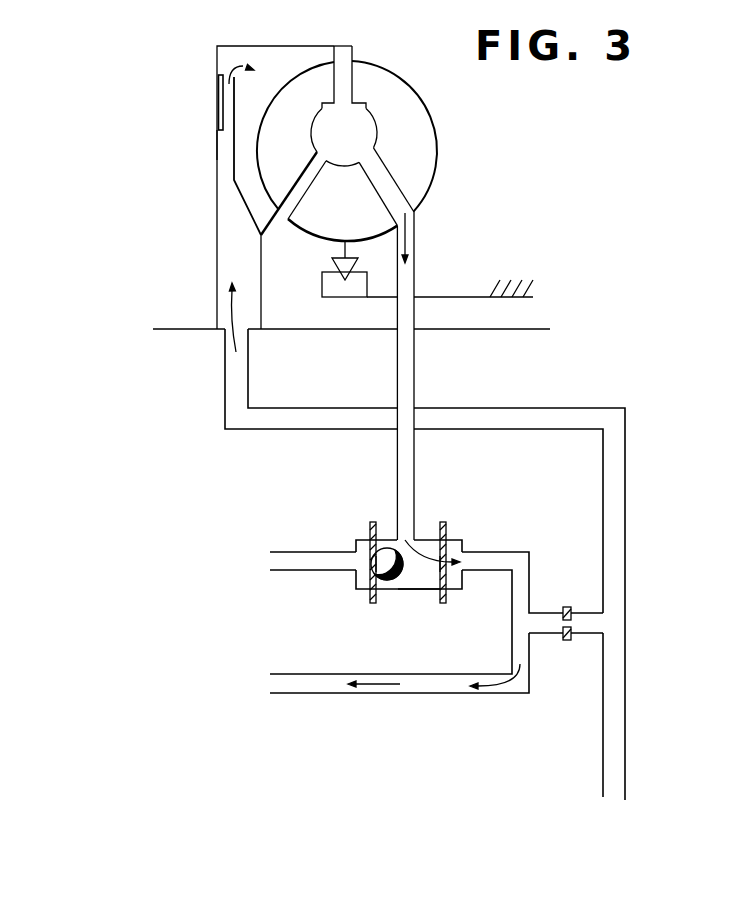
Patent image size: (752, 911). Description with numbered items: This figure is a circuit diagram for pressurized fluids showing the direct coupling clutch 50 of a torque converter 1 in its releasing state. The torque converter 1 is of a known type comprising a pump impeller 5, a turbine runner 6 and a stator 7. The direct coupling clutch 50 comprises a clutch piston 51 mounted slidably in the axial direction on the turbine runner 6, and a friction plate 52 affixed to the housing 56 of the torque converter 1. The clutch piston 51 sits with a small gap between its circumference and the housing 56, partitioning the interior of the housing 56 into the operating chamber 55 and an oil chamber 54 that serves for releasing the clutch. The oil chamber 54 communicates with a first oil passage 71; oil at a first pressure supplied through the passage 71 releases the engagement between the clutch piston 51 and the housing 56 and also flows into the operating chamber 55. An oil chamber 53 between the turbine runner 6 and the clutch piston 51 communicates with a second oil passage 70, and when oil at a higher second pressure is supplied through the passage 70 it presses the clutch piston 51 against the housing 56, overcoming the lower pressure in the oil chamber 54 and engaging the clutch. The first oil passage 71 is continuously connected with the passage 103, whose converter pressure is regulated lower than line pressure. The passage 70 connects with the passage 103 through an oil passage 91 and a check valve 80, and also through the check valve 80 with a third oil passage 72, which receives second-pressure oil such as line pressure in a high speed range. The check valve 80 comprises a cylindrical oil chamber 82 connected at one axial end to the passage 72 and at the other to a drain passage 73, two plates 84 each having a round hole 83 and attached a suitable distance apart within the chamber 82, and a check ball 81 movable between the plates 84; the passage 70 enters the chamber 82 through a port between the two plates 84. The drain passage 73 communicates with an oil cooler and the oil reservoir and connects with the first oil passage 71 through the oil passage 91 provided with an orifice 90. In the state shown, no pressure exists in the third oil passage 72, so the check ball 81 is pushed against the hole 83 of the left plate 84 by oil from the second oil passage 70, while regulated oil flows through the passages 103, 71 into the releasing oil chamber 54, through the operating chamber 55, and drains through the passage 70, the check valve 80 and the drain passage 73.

The torque converter 1 is at (373, 128).
The pump impeller 5 is at (417, 153).
The turbine runner 6 is at (315, 93).
The stator 7 is at (362, 215).
The operating chamber 55 is at (353, 123).
The direct coupling clutch 50 is at (110, 137).
The clutch piston 51 is at (234, 178).
The friction plate 52 is at (218, 95).
The oil chamber 53 is at (258, 92).
The oil chamber 54 is at (233, 243).
The housing 56 is at (218, 148).
The second oil passage 70 is at (408, 361).
The first oil passage 71 is at (593, 408).
The third oil passage 72 is at (295, 560).
The drain passage 73 is at (325, 687).
The check valve 80 is at (467, 518).
The check ball 81 is at (393, 583).
The cylindrical oil chamber 82 is at (415, 578).
The round hole 83 is at (372, 575).
The plate 84 is at (371, 524).
The orifice 90 is at (573, 625).
The oil passage 91 is at (540, 618).
The passage 103 is at (607, 737).